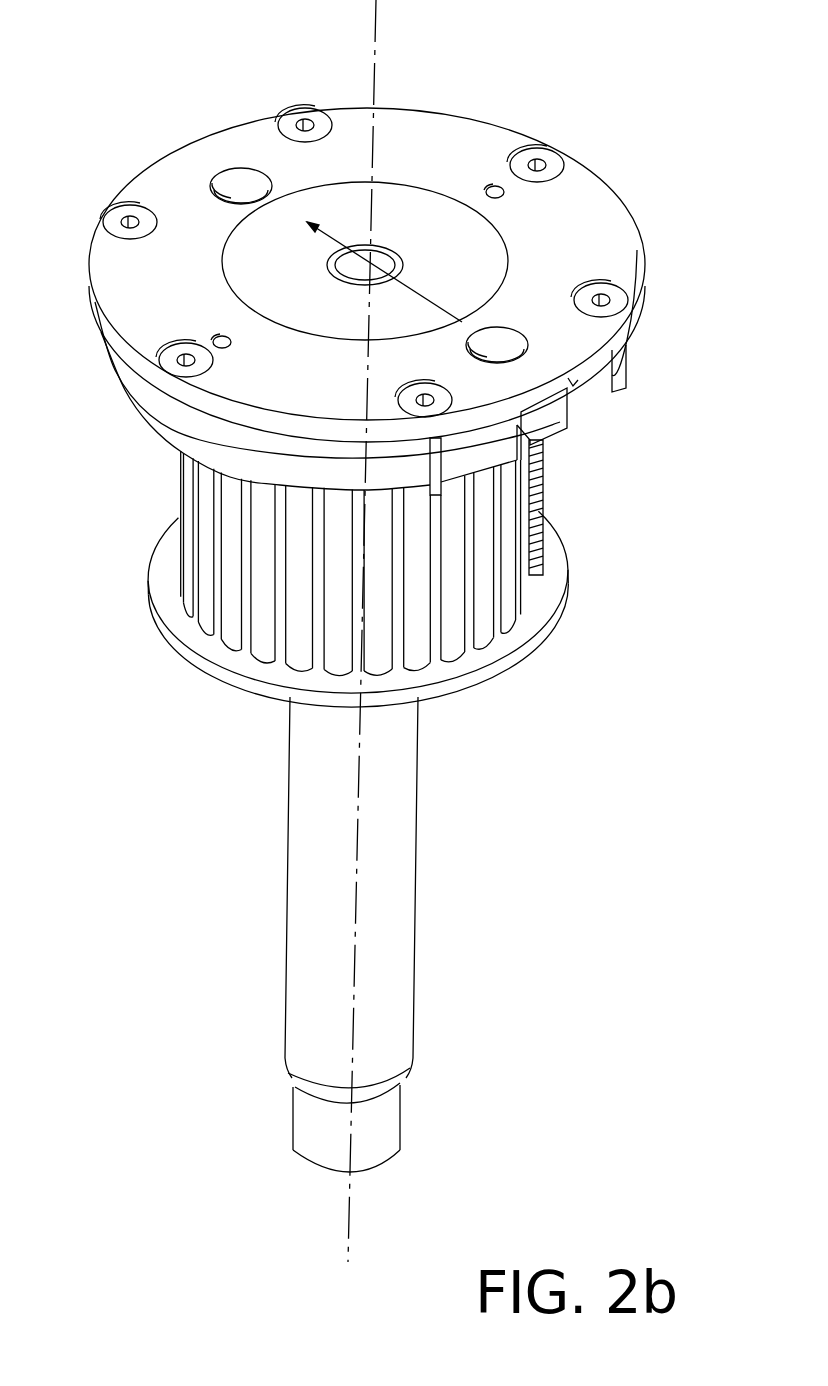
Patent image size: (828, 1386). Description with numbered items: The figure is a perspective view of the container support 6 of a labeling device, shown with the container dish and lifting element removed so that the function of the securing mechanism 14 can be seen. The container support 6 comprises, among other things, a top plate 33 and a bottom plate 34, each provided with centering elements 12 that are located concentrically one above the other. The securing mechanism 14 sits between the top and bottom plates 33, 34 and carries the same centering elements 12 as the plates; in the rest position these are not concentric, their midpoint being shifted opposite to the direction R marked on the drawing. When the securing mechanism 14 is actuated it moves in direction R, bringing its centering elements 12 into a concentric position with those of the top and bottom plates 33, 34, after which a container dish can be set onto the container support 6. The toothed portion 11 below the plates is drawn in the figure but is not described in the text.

The container support 6 is at (243, 118).
The external toothing / splines 11 is at (507, 599).
The centering elements 12 is at (497, 345).
The securing mechanism 14 is at (433, 443).
The top plate 33 is at (145, 328).
The bottom plate 34 is at (158, 417).